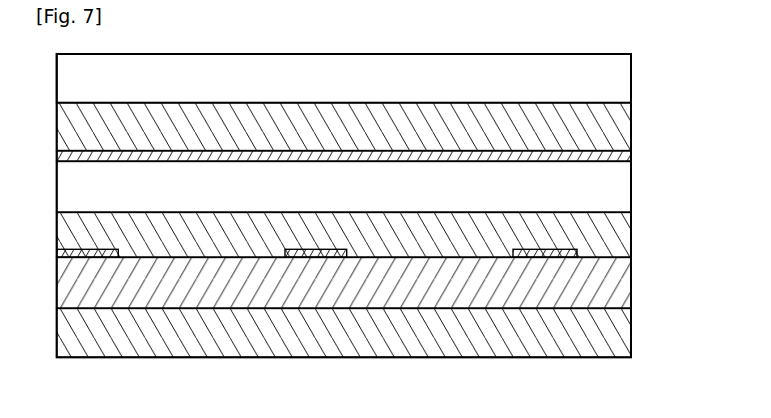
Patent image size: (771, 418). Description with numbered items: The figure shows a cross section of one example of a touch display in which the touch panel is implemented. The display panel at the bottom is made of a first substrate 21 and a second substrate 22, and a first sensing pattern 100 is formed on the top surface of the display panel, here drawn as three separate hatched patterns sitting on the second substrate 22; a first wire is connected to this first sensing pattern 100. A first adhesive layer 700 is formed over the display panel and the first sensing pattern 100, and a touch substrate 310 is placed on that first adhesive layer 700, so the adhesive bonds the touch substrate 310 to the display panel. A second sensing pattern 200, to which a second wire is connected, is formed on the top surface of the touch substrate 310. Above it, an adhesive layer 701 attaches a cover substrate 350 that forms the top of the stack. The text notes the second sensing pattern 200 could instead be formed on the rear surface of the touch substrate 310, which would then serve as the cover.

The cover substrate 350 is at (625, 80).
The adhesive layer 701 is at (625, 128).
The second sensing pattern 200 is at (622, 156).
The touch substrate 310 is at (625, 186).
The first adhesive layer 700 is at (623, 234).
The second substrate 22 is at (618, 286).
The first substrate 21 is at (623, 334).
The first sensing pattern 100 is at (318, 254).